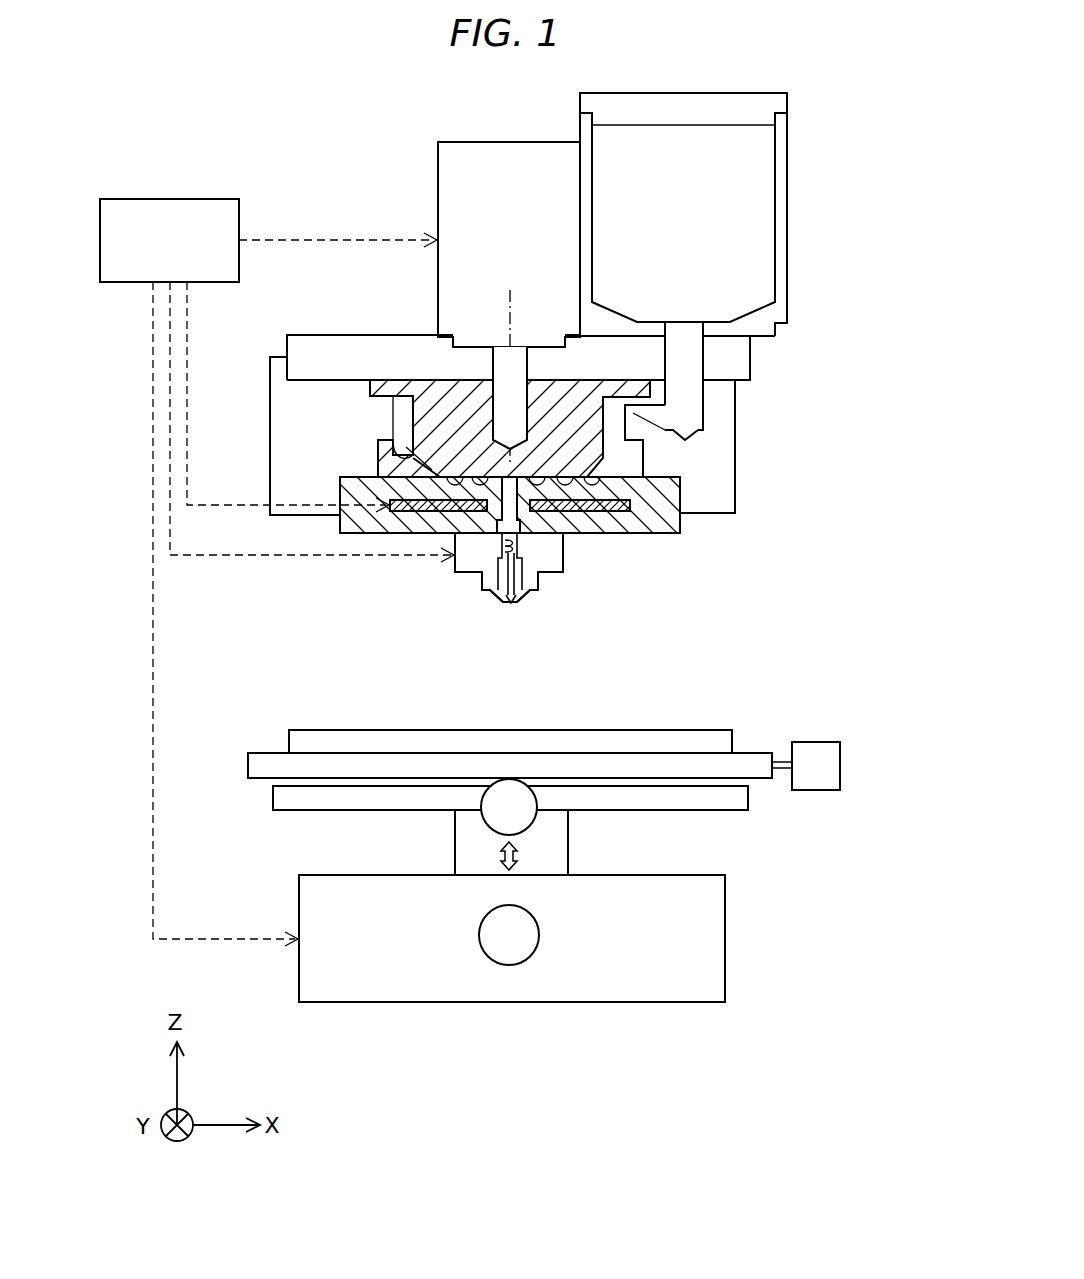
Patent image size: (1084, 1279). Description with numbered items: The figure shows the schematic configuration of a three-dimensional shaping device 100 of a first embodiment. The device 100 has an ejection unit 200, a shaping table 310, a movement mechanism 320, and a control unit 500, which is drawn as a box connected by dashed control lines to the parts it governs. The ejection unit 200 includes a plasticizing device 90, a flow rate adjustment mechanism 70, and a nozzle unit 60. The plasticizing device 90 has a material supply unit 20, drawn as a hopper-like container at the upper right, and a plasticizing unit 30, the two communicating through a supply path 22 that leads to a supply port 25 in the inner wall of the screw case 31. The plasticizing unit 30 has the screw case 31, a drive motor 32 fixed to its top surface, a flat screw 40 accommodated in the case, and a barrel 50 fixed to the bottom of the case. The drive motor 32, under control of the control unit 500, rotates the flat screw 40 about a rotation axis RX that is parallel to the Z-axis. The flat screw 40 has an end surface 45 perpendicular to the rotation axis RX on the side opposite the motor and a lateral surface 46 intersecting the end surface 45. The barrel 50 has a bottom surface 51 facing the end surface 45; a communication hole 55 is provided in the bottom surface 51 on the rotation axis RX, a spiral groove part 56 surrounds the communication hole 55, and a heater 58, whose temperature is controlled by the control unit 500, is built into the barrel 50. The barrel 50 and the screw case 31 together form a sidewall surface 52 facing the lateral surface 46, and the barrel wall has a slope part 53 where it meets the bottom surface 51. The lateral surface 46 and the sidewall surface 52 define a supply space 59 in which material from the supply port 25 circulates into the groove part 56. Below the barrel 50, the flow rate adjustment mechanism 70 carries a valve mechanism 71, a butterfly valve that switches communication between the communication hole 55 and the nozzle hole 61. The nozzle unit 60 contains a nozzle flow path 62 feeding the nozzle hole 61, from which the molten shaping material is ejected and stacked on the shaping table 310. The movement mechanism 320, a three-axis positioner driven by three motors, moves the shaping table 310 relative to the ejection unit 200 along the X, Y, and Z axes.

The three-dimensional shaping device 100 is at (213, 120).
The ejection unit 200 is at (323, 158).
The control unit 500 is at (165, 199).
The drive motor 32 is at (438, 180).
The rotation axis RX is at (506, 302).
The flat screw 40 is at (437, 400).
The screw case 31 is at (332, 336).
The material supply unit 20 is at (787, 265).
The plasticizing unit 30 is at (785, 352).
The plasticizing device 90 is at (850, 255).
The lateral surface 46 is at (393, 418).
The sidewall surface 52 is at (393, 447).
The bottom surface 51 is at (380, 462).
The end surface 45 is at (398, 498).
The barrel 50 is at (345, 525).
The heater 58 is at (392, 516).
The communication hole 55 is at (560, 522).
The groove part 56 is at (603, 518).
The supply space 59 is at (607, 455).
The slope part 53 is at (683, 493).
The supply path 22 is at (682, 400).
The supply port 25 is at (668, 422).
The flow rate adjustment mechanism 70 is at (558, 576).
The valve mechanism 71 is at (455, 562).
The nozzle unit 60 is at (492, 592).
The nozzle hole 61 is at (508, 602).
The nozzle flow path 62 is at (528, 592).
The shaping table 310 is at (733, 740).
The movement mechanism 320 is at (773, 855).